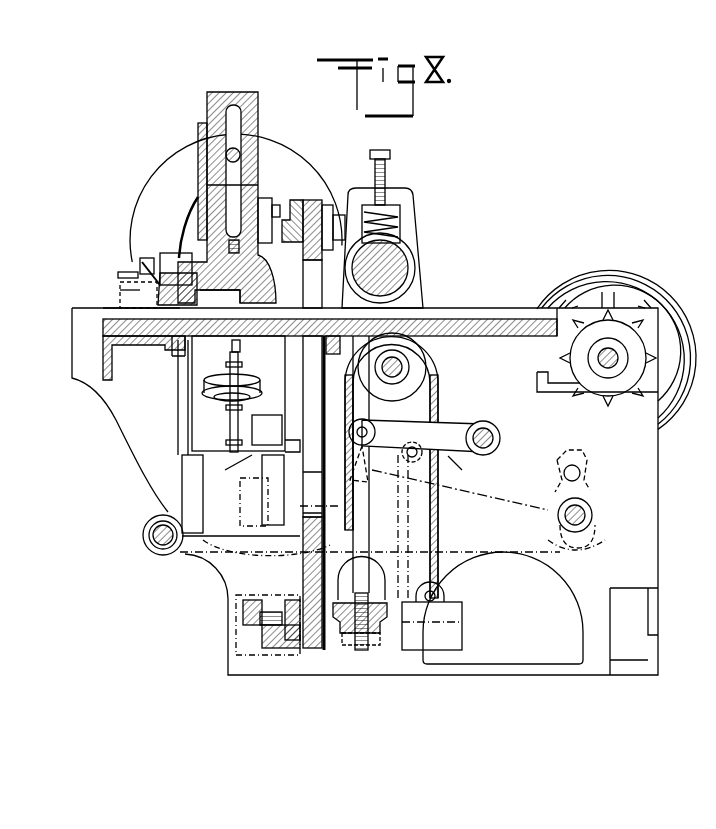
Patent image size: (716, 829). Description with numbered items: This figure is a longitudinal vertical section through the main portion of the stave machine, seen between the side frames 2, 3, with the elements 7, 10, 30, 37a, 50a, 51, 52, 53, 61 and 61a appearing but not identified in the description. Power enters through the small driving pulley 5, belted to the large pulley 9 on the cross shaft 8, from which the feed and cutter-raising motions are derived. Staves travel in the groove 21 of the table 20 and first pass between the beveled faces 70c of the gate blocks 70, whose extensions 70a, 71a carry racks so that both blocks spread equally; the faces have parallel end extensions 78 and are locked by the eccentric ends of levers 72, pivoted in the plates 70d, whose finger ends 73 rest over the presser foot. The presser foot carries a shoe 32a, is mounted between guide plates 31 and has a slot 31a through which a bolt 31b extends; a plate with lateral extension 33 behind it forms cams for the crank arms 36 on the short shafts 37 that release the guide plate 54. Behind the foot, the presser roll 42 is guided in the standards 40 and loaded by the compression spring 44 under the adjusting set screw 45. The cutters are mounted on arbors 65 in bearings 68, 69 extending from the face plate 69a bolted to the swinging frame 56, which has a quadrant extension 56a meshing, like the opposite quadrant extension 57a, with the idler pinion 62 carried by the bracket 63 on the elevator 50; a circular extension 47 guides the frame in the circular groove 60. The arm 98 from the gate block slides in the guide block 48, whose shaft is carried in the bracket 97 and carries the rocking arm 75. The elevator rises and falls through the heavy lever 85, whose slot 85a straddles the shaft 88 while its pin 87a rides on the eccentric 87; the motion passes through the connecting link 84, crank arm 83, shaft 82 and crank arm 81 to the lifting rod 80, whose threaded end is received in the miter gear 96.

The side frame 2 is at (318, 172).
The side frame 3 is at (212, 578).
The small driving pulley 5 is at (158, 555).
The shaft 7 is at (153, 535).
The cross shaft 8 is at (604, 368).
The large pulley 9 is at (610, 282).
The bracket 10 is at (624, 392).
The table 20 is at (484, 336).
The groove 21 is at (450, 318).
The flange 30 is at (198, 132).
The guide plates 31 is at (208, 150).
The slot 31a is at (236, 118).
The bolt 31b is at (241, 156).
The shoe 32a is at (220, 294).
The lateral extension 33 is at (207, 185).
The crank arms 36 is at (270, 210).
The short shafts 37 is at (343, 218).
The stop plate 37a is at (338, 223).
The standards 40 is at (412, 215).
The presser roll 42 is at (414, 270).
The compression spring 44 is at (400, 228).
The adjusting set screw 45 is at (390, 155).
The circular extension 47 is at (300, 447).
The guide block 48 is at (182, 466).
The elevator 50 is at (322, 424).
The cap 50a is at (381, 579).
The weight 51 is at (446, 590).
The housing 52 is at (438, 410).
The pulley 53 is at (427, 380).
The guide plate 54 is at (297, 205).
The swinging frame 56 is at (292, 466).
The quadrant extension 56a is at (285, 600).
The quadrant extension 57a is at (243, 608).
The circular groove 60 is at (300, 542).
The axis line 61 is at (350, 500).
The disk 61a is at (212, 398).
The idler pinion 62 is at (262, 637).
The bracket 63 is at (288, 652).
The arbors 65 is at (221, 349).
The bearings 68 is at (230, 364).
The bearings 69 is at (276, 426).
The face plate 69a is at (274, 385).
The gate block 70 is at (170, 253).
The extension 70a is at (133, 372).
The beveled face 70c is at (122, 290).
The plate 70d is at (120, 276).
The extension 71a is at (172, 350).
The lever 72 is at (148, 258).
The finger end 73 is at (142, 264).
The rocking arm 75 is at (246, 485).
The end extension 78 is at (160, 304).
The lifting rod 80 is at (362, 652).
The crank arm 81 is at (450, 426).
The shaft 82 is at (500, 438).
The crank arm 83 is at (460, 468).
The connecting link 84 is at (404, 470).
The heavy lever 85 is at (482, 506).
The slot 85a is at (605, 550).
The eccentric 87 is at (605, 522).
The pin 87a is at (580, 472).
The shaft 88 is at (586, 510).
The miter gear 96 is at (387, 615).
The bracket 97 is at (230, 480).
The arm 98 is at (188, 430).